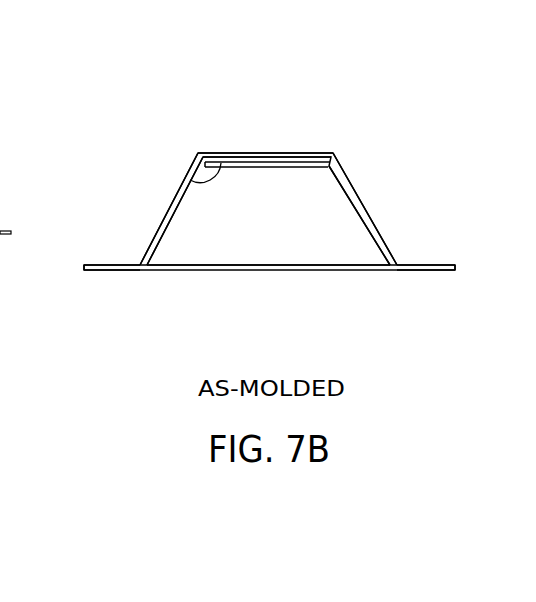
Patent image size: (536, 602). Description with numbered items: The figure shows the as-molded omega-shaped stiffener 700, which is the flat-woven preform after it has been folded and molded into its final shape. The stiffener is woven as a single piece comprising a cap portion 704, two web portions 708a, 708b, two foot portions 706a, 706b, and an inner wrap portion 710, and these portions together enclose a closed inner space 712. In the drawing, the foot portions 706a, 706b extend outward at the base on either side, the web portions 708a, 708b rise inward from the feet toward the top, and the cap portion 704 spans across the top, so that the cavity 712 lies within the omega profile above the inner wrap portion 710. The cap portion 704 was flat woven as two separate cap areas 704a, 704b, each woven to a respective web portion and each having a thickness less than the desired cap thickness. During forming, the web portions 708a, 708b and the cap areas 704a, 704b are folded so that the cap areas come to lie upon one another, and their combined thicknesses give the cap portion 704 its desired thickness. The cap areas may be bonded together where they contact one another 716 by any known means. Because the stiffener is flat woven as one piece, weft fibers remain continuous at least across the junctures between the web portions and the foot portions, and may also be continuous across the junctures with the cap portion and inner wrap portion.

The as-molded omega-shaped stiffener 700 is at (90, 121).
The cap portion 704 is at (237, 118).
The cap area 704a is at (272, 152).
The cap area 704b is at (190, 180).
The foot portion 706a is at (106, 272).
The foot portion 706b is at (427, 272).
The web portion 708a is at (162, 222).
The web portion 708b is at (383, 235).
The inner wrap portion 710 is at (245, 272).
The closed inner space 712 is at (326, 212).
The contact region of cap areas 716 is at (336, 154).